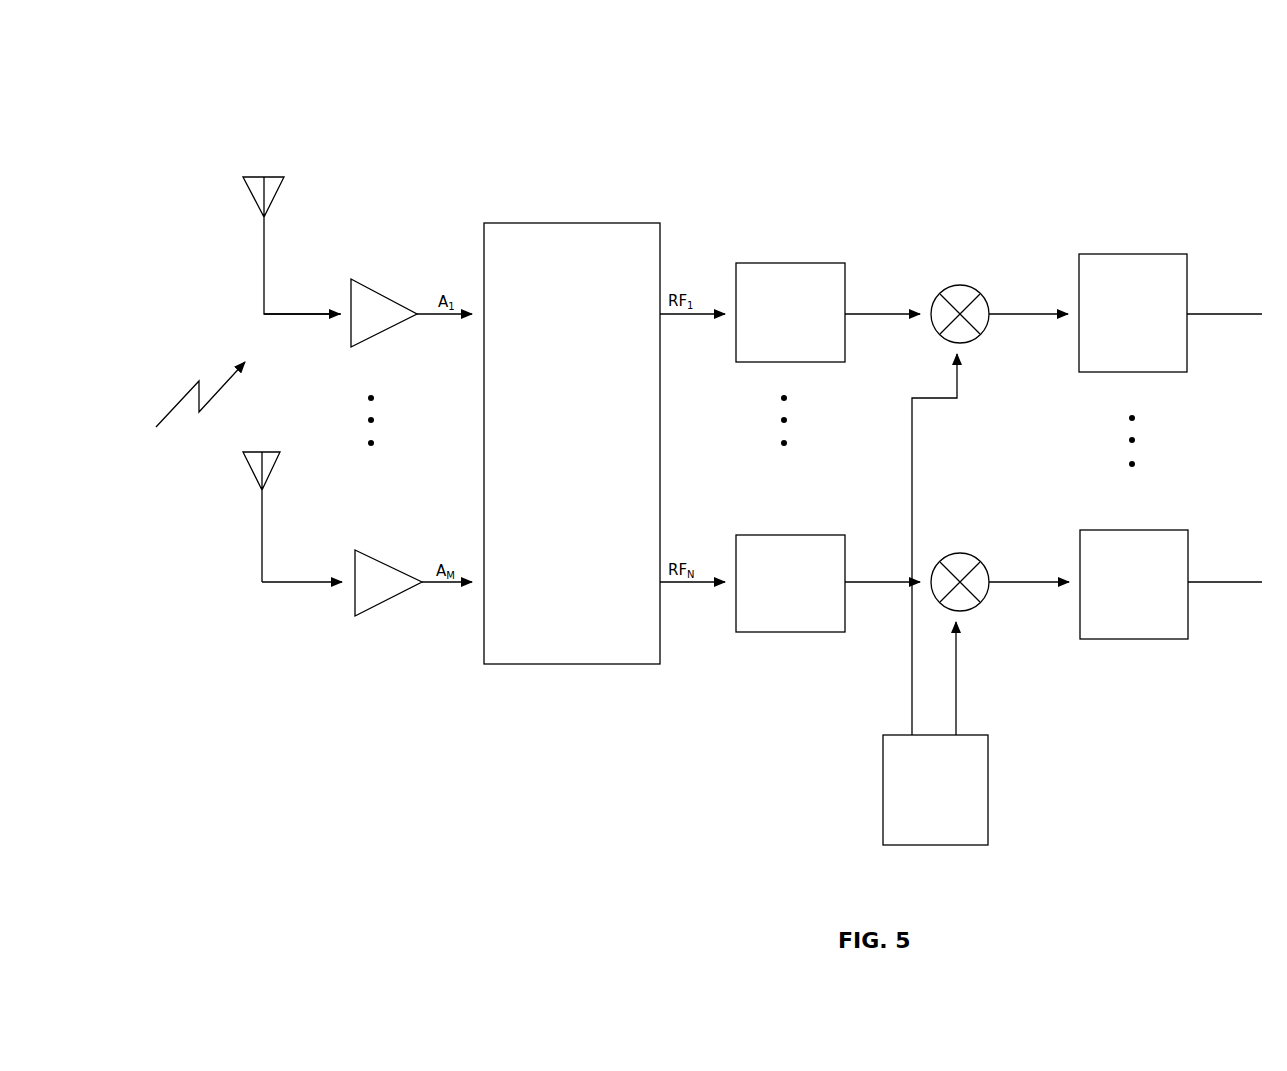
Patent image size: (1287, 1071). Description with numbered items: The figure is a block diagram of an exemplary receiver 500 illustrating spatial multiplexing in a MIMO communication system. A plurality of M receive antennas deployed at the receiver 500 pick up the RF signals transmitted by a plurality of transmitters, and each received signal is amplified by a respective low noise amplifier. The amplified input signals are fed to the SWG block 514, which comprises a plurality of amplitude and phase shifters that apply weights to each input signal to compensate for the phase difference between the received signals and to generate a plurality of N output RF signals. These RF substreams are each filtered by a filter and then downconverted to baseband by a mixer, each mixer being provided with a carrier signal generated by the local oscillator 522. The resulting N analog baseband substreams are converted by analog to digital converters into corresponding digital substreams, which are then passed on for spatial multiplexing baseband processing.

The receiver 500 is at (519, 151).
The SWG block 514 is at (603, 223).
The local oscillator 522 is at (988, 750).